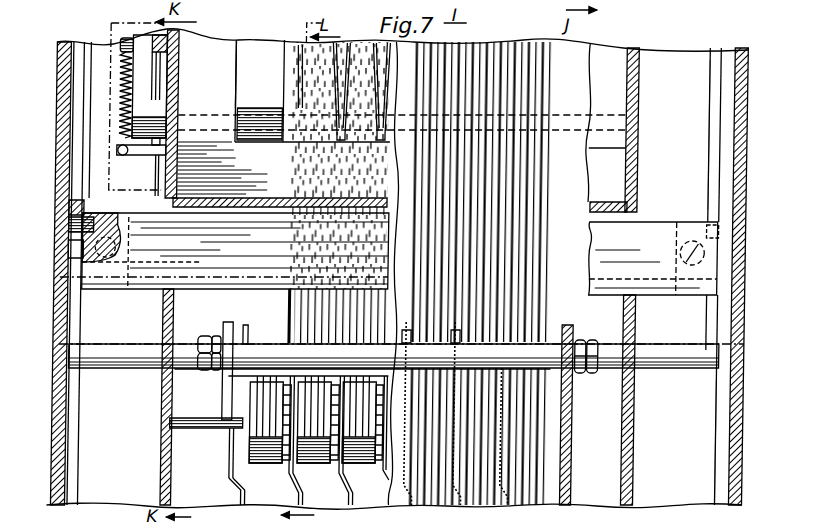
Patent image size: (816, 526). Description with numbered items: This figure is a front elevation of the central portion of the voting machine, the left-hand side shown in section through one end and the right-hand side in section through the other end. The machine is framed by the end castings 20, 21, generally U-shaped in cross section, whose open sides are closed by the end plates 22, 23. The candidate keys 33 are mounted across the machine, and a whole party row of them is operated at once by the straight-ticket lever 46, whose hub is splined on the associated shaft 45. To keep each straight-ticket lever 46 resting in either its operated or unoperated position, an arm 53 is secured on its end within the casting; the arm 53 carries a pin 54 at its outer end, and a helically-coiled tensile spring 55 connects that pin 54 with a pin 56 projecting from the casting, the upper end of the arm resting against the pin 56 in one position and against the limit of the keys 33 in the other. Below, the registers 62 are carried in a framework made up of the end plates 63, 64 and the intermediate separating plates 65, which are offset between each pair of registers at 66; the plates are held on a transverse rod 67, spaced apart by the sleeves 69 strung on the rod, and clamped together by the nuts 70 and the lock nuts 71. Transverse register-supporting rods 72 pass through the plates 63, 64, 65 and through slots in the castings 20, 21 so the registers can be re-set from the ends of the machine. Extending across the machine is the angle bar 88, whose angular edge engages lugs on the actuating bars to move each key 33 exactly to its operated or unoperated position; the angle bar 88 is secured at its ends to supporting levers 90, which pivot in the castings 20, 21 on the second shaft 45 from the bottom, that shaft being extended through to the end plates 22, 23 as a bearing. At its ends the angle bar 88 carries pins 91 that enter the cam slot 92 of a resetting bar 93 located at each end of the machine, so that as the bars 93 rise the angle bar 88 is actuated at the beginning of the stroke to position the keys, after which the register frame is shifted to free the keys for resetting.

The end casting 20 is at (167, 387).
The end casting 21 is at (639, 397).
The end plate 22 is at (57, 386).
The end plate 23 is at (745, 379).
The key 33 is at (334, 40).
The shaft 45 is at (290, 115).
The straight-ticket lever 46 is at (255, 74).
The arm 53 is at (137, 79).
The pin 54 is at (119, 42).
The spring 55 is at (117, 150).
The pin 56 is at (140, 160).
The register 62 is at (267, 465).
The end plate 63 is at (227, 404).
The end plate 64 is at (577, 414).
The separating plate 65 is at (236, 442).
The offset 66 is at (244, 488).
The transverse rod 67 is at (200, 343).
The sleeve 69 is at (314, 353).
The nut 70 is at (209, 334).
The lock nut 71 is at (204, 336).
The register-supporting rod 72 is at (187, 427).
The angle bar 88 is at (224, 251).
The supporting lever 90 is at (88, 125).
The pin 91 is at (61, 216).
The cam slot 92 is at (72, 248).
The resetting bar 93 is at (80, 439).